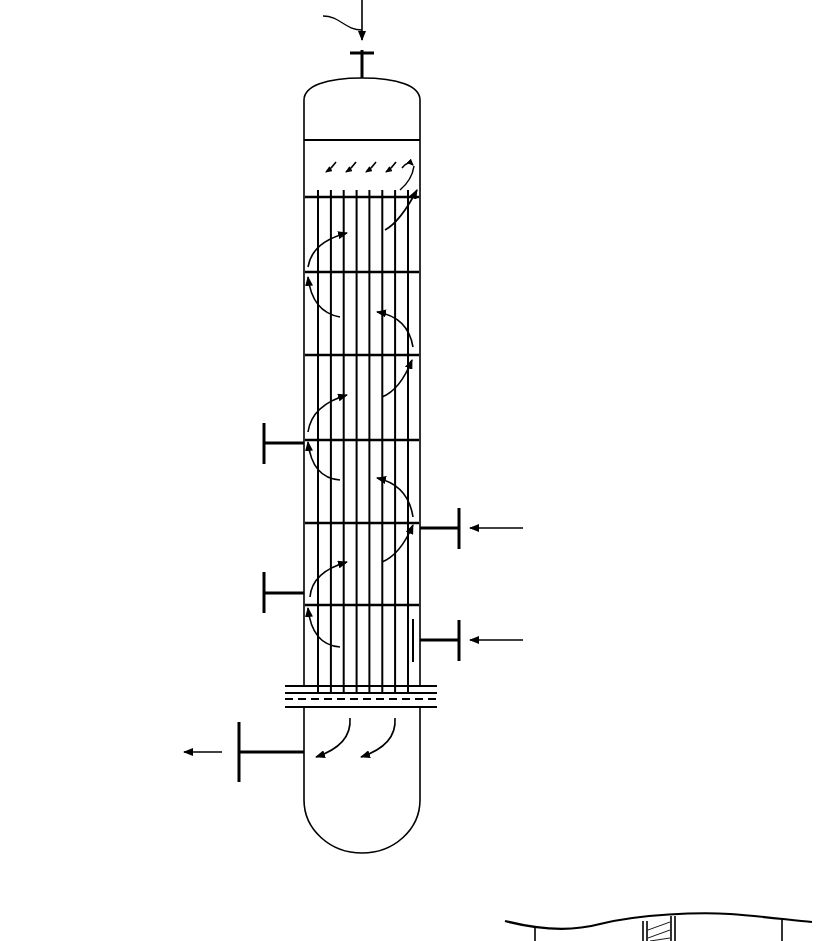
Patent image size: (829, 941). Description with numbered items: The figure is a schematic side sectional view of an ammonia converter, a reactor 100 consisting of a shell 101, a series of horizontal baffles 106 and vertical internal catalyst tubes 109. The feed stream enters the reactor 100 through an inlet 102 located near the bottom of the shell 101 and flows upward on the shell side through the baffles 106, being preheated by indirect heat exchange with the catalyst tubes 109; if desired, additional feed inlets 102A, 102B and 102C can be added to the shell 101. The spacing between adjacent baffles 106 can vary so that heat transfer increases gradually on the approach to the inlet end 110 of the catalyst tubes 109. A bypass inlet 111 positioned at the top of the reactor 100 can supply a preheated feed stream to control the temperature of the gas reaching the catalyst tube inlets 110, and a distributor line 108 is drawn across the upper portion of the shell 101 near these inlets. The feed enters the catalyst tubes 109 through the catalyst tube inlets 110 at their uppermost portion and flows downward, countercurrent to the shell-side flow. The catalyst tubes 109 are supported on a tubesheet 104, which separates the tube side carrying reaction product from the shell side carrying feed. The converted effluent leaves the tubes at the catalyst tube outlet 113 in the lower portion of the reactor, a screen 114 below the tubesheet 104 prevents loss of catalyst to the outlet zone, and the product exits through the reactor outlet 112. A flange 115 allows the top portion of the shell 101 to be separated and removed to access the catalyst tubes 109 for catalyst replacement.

The reactor 100 is at (549, 85).
The shell 101 is at (320, 87).
The inlet 102 is at (435, 635).
The additional feed inlet 102A is at (282, 598).
The additional feed inlet 102B is at (435, 523).
The additional feed inlet 102C is at (282, 448).
The tubesheet 104 is at (438, 693).
The baffles 106 is at (304, 355).
The upper tube sheet / distributor 108 is at (407, 150).
The catalyst tube inlet 110 is at (418, 190).
The catalyst tubes 109 is at (400, 417).
The bypass inlet 111 is at (368, 57).
The reactor outlet 112 is at (281, 756).
The catalyst tube outlet 113 is at (426, 710).
The screen 114 is at (438, 700).
The flange 115 is at (438, 687).